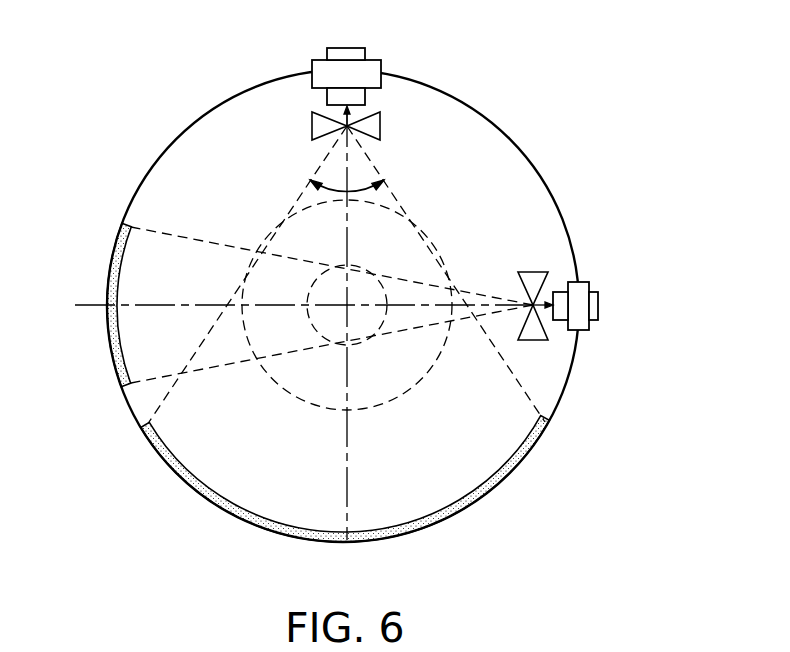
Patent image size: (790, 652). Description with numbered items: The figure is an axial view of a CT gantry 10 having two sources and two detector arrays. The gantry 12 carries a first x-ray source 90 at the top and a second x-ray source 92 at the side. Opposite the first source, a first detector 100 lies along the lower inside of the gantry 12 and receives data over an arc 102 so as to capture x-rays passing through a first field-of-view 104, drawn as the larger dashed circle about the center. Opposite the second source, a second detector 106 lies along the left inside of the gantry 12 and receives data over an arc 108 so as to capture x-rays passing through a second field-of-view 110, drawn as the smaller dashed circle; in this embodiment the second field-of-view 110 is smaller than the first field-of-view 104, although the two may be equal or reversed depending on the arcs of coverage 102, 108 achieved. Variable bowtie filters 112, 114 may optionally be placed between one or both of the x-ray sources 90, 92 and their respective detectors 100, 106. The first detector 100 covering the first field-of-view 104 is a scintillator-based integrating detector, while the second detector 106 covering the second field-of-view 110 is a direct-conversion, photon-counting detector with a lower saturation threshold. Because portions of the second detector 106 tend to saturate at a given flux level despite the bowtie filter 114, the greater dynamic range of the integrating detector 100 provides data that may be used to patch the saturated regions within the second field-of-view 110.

The CT gantry 10 is at (549, 50).
The gantry 12 is at (560, 200).
The first x-ray source 90 is at (375, 60).
The second x-ray source 92 is at (598, 308).
The first detector 100 is at (483, 503).
The arc 102 is at (335, 190).
The first field-of-view 104 is at (405, 390).
The second detector 106 is at (110, 278).
The arc 108 is at (495, 367).
The second field-of-view 110 is at (383, 318).
The variable bowtie filter 112 is at (381, 120).
The variable bowtie filter 114 is at (537, 342).